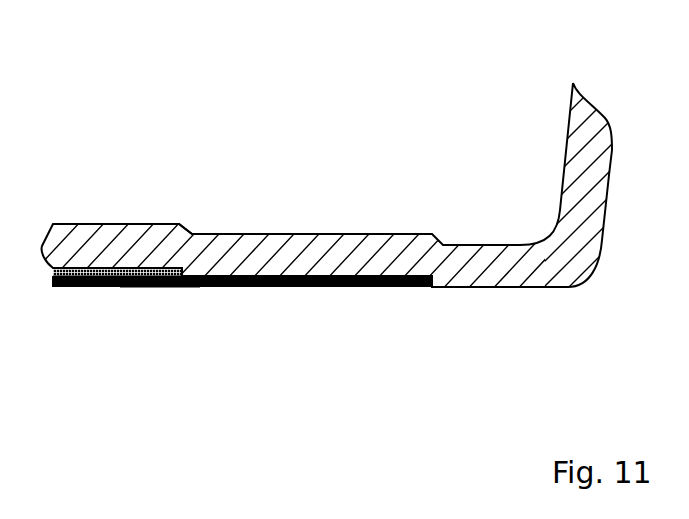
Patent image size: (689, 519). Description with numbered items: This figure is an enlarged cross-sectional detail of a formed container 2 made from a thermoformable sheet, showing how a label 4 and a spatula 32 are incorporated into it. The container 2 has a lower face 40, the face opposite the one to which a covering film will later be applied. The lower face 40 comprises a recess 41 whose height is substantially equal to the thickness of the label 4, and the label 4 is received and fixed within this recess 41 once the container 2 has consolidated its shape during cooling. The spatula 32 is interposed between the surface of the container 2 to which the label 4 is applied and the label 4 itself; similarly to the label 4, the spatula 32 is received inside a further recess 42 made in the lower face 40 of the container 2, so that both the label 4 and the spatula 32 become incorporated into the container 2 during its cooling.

The container 2 is at (432, 120).
The spatula 32 is at (102, 268).
The further recess 42 is at (181, 224).
The label 4 is at (242, 287).
The recess 41 is at (432, 287).
The lower face 40 is at (160, 345).